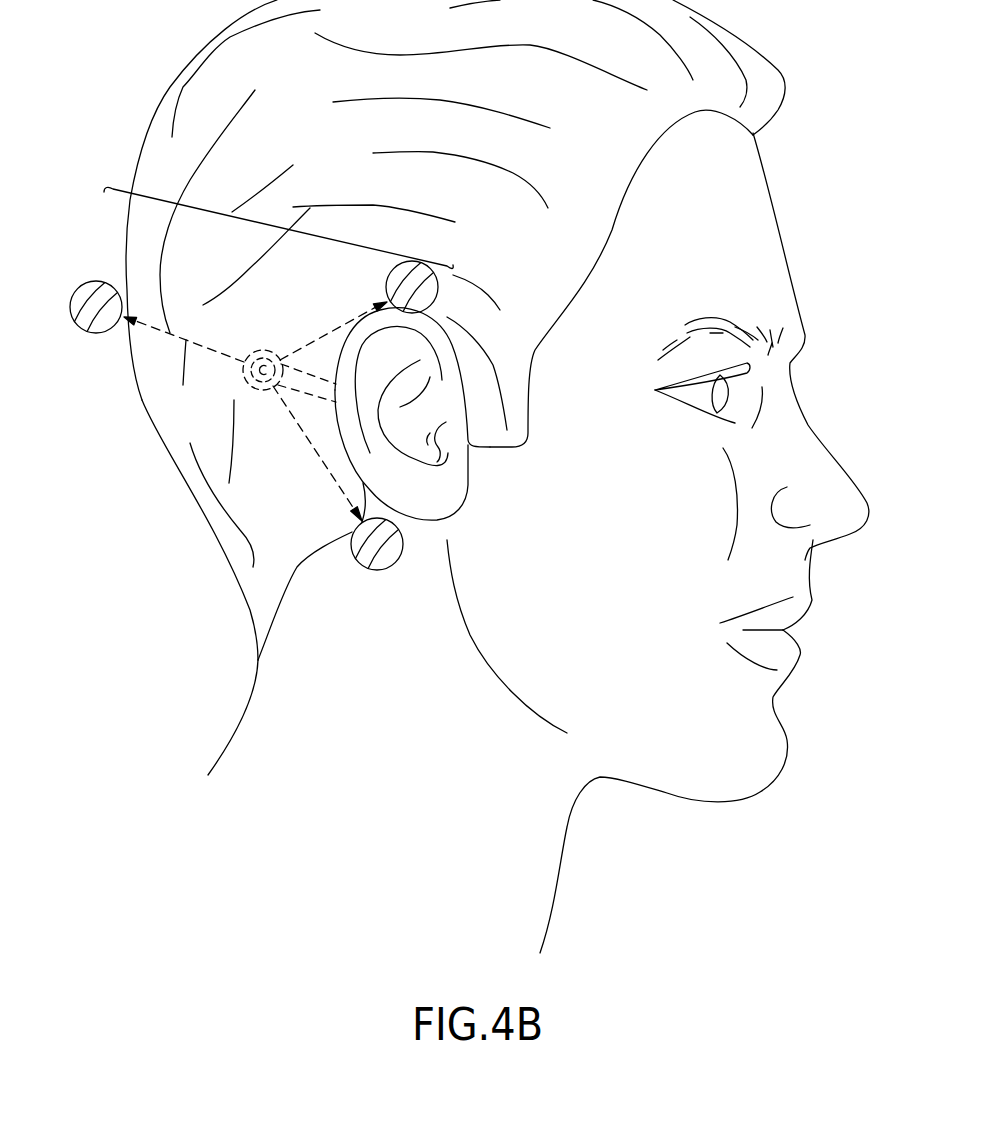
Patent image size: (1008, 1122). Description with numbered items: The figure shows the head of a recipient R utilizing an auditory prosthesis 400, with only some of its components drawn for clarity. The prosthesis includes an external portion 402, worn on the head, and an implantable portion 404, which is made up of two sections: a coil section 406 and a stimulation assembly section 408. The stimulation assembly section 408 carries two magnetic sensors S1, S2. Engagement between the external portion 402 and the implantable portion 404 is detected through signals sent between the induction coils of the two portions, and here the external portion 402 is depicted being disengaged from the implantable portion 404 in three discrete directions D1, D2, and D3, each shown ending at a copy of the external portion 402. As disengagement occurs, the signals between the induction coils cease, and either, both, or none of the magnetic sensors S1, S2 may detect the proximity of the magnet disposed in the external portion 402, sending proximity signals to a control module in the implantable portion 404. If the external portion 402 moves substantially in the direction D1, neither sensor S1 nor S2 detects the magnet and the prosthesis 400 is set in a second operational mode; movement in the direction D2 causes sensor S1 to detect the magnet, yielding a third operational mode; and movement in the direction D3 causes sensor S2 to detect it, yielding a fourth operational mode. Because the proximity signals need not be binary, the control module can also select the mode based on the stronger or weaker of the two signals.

The auditory prosthesis 400 is at (284, 228).
The external portion 402 is at (80, 284).
The implantable portion 404 is at (263, 343).
The coil section 406 is at (240, 363).
The stimulation assembly section 408 is at (320, 400).
The first direction D1 is at (184, 342).
The second direction D2 is at (333, 316).
The third direction D3 is at (317, 453).
The magnetic sensor S1 is at (320, 378).
The magnetic sensor S2 is at (310, 406).
The recipient R is at (820, 133).